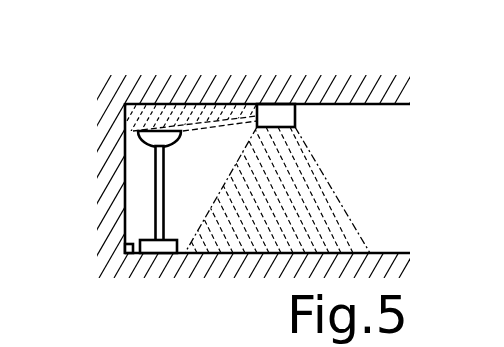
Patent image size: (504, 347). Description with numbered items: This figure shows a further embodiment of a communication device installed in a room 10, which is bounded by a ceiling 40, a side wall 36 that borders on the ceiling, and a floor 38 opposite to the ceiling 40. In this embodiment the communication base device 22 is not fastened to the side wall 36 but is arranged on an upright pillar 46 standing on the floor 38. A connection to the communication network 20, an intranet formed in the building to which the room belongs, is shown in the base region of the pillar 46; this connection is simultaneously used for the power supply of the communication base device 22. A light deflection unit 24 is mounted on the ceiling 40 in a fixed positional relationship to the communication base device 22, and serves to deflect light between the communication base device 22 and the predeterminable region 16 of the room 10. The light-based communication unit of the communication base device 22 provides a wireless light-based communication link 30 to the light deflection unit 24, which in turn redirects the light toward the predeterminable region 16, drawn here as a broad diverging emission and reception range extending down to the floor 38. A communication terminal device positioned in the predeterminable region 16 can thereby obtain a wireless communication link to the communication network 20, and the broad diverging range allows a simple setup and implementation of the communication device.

The room 10 is at (368, 77).
The predeterminable region 16 is at (315, 198).
The communication network 20 is at (123, 245).
The communication base device 22 is at (124, 144).
The light deflection unit 24 is at (289, 91).
The wireless light-based communication link 30 is at (200, 118).
The side wall 36 is at (110, 222).
The floor 38 is at (392, 255).
The ceiling 40 is at (392, 105).
The upright pillar 46 is at (153, 170).